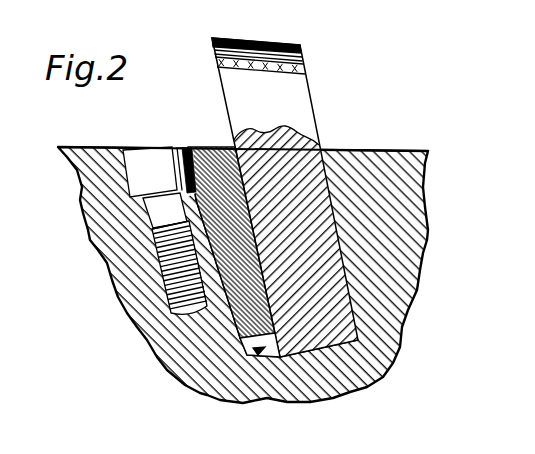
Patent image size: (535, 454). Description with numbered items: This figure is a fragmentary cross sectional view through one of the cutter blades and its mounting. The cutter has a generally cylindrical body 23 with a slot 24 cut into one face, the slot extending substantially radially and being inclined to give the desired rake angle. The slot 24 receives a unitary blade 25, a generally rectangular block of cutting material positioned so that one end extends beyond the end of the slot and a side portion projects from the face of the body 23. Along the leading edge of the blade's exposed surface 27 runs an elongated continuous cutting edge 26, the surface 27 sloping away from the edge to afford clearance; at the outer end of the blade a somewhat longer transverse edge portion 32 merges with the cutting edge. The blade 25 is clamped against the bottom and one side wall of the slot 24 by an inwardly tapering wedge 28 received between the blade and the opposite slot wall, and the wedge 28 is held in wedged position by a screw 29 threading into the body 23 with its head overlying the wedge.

The cylindrical body 23 is at (390, 163).
The slot 24 is at (258, 355).
The blade 25 is at (322, 154).
The cutting edge 26 is at (263, 181).
The exposed surface 27 is at (260, 41).
The wedge 28 is at (205, 153).
The screw 29 is at (152, 163).
The transverse edge portion 32 is at (213, 60).